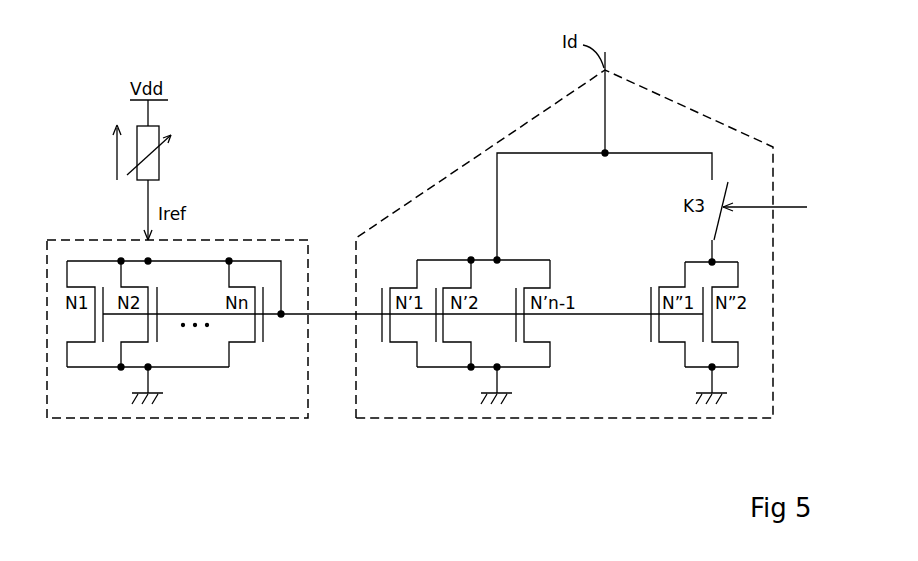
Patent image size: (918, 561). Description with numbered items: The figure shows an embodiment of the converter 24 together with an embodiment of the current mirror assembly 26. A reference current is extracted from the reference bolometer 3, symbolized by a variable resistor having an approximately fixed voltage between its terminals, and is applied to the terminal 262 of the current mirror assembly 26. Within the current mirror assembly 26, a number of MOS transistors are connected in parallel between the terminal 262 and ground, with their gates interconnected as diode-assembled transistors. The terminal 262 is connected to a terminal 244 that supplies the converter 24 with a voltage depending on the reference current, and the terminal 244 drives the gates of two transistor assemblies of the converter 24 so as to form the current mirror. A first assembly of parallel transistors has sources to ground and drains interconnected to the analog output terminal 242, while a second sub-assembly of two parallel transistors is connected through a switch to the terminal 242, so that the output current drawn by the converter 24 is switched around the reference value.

The reference bolometer 3 is at (118, 106).
The current mirror assembly 26 is at (217, 419).
The terminal of application of current Iref 262 is at (151, 260).
The terminal supplying voltage V(Iref) 244 is at (335, 316).
The converter 24 is at (408, 419).
The analog output terminal 242 is at (608, 64).